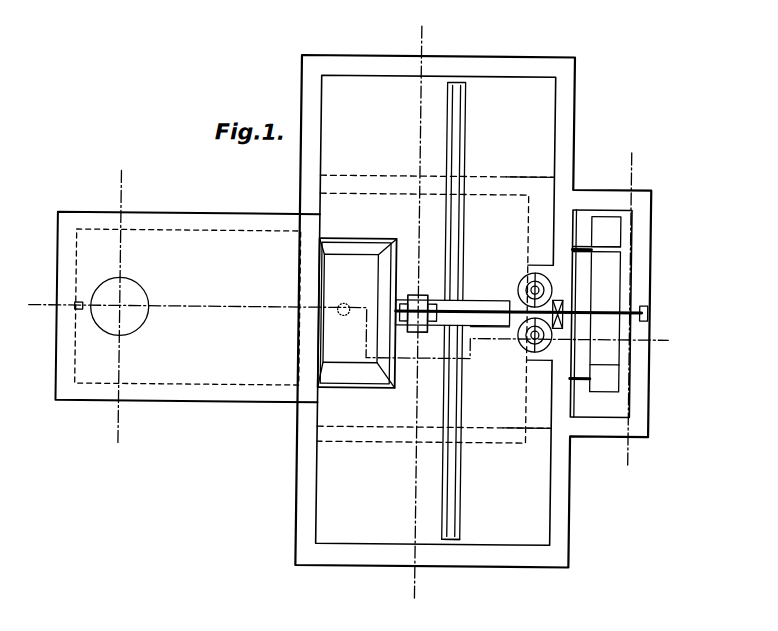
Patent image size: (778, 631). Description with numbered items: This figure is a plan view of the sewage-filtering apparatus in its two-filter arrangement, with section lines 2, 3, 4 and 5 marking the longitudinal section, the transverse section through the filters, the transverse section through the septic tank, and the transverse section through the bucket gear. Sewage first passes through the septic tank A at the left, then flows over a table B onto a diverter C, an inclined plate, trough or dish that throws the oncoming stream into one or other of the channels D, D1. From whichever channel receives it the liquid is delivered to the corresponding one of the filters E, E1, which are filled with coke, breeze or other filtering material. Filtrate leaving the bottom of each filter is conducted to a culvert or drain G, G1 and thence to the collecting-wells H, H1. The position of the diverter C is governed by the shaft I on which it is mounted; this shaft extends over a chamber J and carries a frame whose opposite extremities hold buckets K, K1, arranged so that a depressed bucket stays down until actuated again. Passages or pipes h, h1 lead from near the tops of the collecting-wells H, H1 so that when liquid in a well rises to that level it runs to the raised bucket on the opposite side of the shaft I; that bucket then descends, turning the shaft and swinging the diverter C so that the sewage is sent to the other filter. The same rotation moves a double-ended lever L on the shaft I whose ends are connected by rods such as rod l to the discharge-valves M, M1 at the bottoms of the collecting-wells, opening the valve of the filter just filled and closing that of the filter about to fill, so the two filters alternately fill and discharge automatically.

The septic tank A is at (187, 307).
The table B is at (357, 313).
The diverter C is at (416, 294).
The channel D is at (466, 213).
The channel D1 is at (466, 410).
The filter E is at (436, 310).
The filter E1 is at (475, 512).
The culvert or drain G is at (522, 177).
The culvert or drain G1 is at (514, 453).
The collecting-well H is at (530, 274).
The collecting-well H1 is at (524, 342).
The discharge-valve M is at (540, 280).
The discharge-valve M1 is at (532, 346).
The double-ended lever L is at (522, 294).
The rod l is at (478, 328).
The shaft I is at (598, 311).
The chamber J is at (636, 235).
The bucket K is at (596, 290).
The bucket K1 is at (600, 389).
The passage or pipe h is at (578, 378).
The passage or pipe h1 is at (578, 247).
The section line 2 2 is at (347, 327).
The section line 3 3 is at (419, 310).
The section line 4 4 is at (120, 303).
The section line 5 5 is at (625, 307).